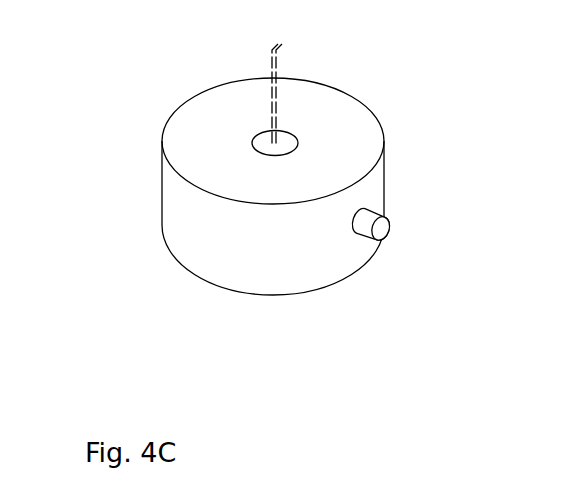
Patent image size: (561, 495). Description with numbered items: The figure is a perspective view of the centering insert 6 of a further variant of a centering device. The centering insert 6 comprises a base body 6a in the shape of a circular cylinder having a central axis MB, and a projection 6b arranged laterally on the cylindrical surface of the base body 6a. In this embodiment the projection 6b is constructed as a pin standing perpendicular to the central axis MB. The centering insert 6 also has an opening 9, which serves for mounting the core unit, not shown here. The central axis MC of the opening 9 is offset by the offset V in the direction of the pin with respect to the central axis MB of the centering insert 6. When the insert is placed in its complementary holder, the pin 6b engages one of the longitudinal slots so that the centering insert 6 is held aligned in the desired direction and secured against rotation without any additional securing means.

The centering insert 6 is at (145, 132).
The base body 6a is at (333, 263).
The projection 6b is at (370, 218).
The opening 9 is at (267, 143).
The central axis MB is at (272, 102).
The central axis of the opening MC is at (277, 115).
The offset V is at (289, 85).